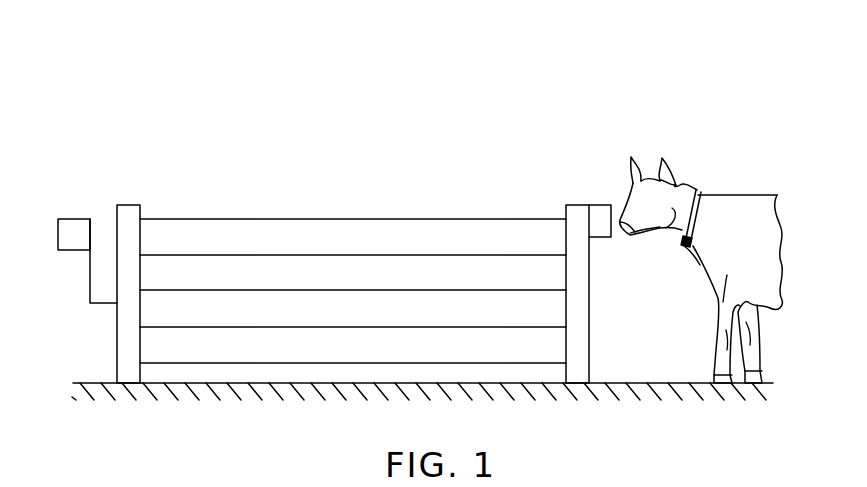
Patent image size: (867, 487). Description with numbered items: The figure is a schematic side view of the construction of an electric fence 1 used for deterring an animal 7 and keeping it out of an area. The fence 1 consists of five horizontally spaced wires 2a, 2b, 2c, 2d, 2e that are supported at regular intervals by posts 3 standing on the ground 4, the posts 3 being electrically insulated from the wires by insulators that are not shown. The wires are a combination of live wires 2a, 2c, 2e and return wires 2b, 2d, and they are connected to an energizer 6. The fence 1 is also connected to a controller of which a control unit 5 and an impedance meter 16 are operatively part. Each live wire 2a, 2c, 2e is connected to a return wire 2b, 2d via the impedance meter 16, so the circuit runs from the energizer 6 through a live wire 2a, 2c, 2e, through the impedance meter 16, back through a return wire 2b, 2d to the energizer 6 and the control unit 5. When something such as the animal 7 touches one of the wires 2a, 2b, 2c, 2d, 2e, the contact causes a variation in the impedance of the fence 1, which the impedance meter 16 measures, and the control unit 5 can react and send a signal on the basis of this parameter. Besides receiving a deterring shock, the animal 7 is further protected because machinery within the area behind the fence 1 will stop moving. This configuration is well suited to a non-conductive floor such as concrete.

The fence 1 is at (294, 195).
The live wire 2a is at (353, 208).
The return wire 2b is at (353, 244).
The live wire 2c is at (353, 279).
The return wire 2d is at (353, 316).
The live wire 2e is at (353, 352).
The post 3 is at (130, 207).
The ground 4 is at (657, 385).
The control unit 5 is at (68, 227).
The energizer 6 is at (103, 227).
The animal 7 is at (735, 197).
The impedance meter 16 is at (598, 205).